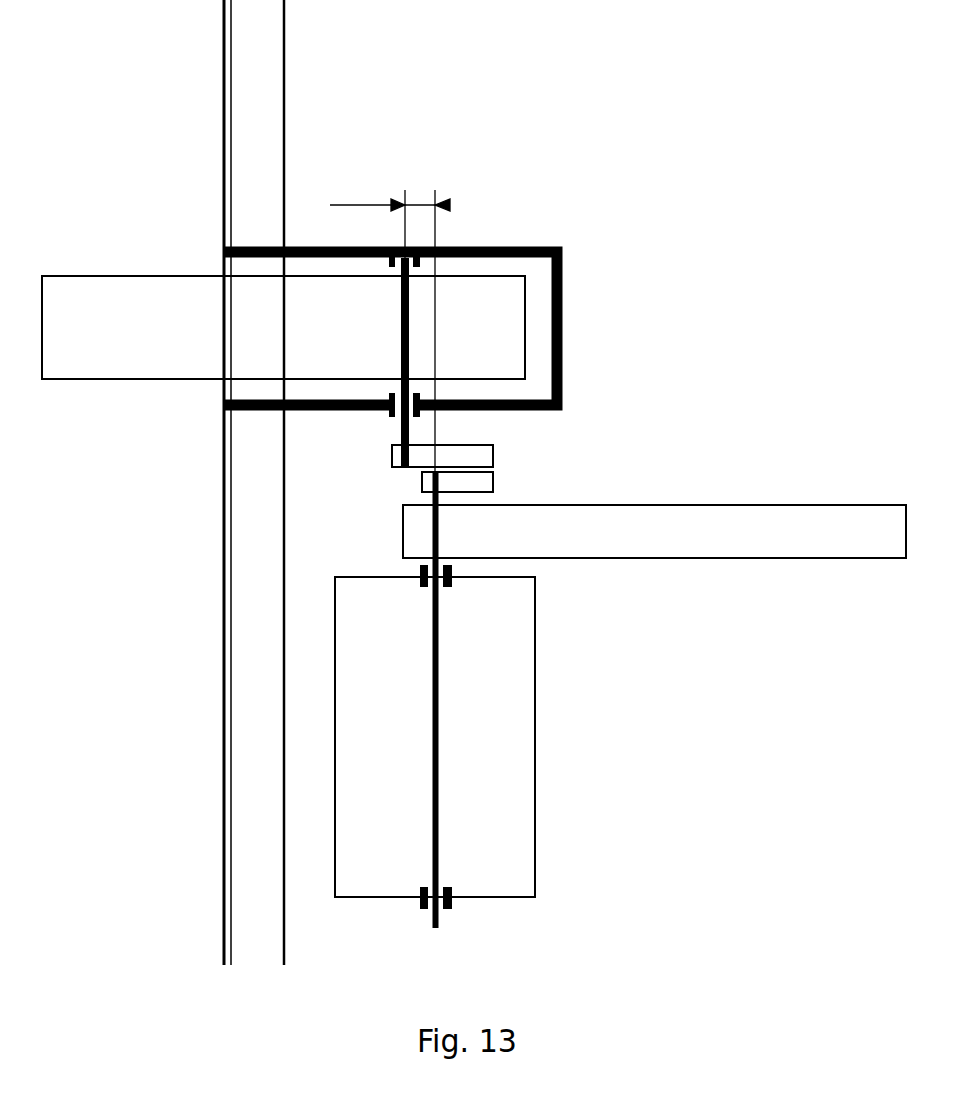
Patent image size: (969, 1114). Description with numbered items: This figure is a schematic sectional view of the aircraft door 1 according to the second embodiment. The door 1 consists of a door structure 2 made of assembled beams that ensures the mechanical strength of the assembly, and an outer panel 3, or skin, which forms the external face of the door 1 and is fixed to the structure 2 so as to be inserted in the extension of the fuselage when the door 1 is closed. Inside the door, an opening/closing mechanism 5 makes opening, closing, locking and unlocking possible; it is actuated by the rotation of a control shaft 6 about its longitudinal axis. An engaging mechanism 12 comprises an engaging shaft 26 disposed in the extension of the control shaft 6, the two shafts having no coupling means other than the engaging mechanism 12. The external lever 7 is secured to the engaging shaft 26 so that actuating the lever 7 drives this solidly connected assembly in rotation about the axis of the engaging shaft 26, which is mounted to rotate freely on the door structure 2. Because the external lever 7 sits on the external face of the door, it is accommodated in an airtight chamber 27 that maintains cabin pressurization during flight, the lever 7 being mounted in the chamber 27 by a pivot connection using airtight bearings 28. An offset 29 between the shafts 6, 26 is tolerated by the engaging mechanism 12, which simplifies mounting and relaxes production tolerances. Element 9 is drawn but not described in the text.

The aircraft door 1 is at (186, 80).
The door structure 2 is at (272, 100).
The outer panel 3 is at (224, 200).
The opening/closing mechanism 5 is at (510, 718).
The control shaft 6 is at (440, 678).
The external lever 7 is at (58, 290).
The support arm 9 is at (647, 518).
The engaging mechanism 12 is at (528, 465).
The engaging shaft 26 is at (400, 340).
The airtight chamber 27 is at (562, 281).
The airtight bearings 28 is at (393, 266).
The offset 29 is at (390, 323).